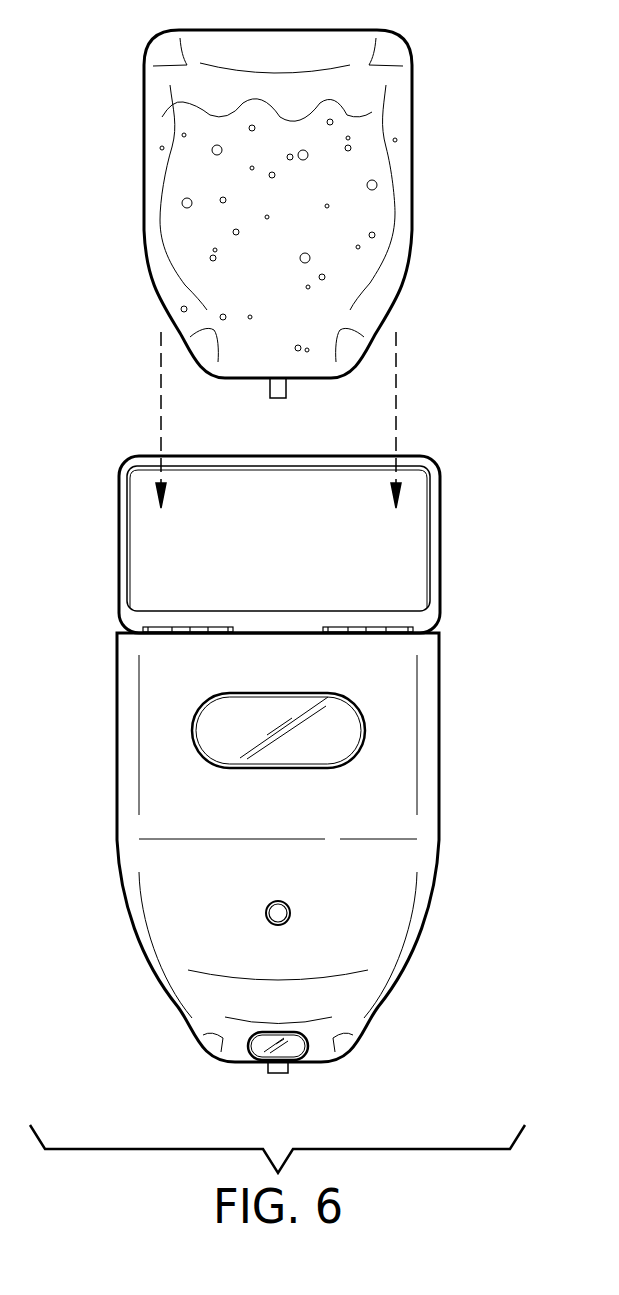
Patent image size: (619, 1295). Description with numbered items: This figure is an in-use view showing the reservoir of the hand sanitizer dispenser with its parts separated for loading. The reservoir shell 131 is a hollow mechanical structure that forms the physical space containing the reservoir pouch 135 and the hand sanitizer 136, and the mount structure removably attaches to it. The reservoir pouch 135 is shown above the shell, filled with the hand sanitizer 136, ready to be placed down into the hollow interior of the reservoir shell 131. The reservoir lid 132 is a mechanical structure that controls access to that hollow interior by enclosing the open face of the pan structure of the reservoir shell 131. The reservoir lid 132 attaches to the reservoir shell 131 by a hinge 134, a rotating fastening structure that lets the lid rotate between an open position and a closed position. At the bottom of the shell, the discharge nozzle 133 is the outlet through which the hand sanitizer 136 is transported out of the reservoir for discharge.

The reservoir shell 131 is at (427, 728).
The reservoir lid 132 is at (440, 545).
The discharge nozzle 133 is at (278, 1073).
The hinge 134 is at (382, 630).
The reservoir pouch 135 is at (412, 93).
The hand sanitizer 136 is at (360, 260).